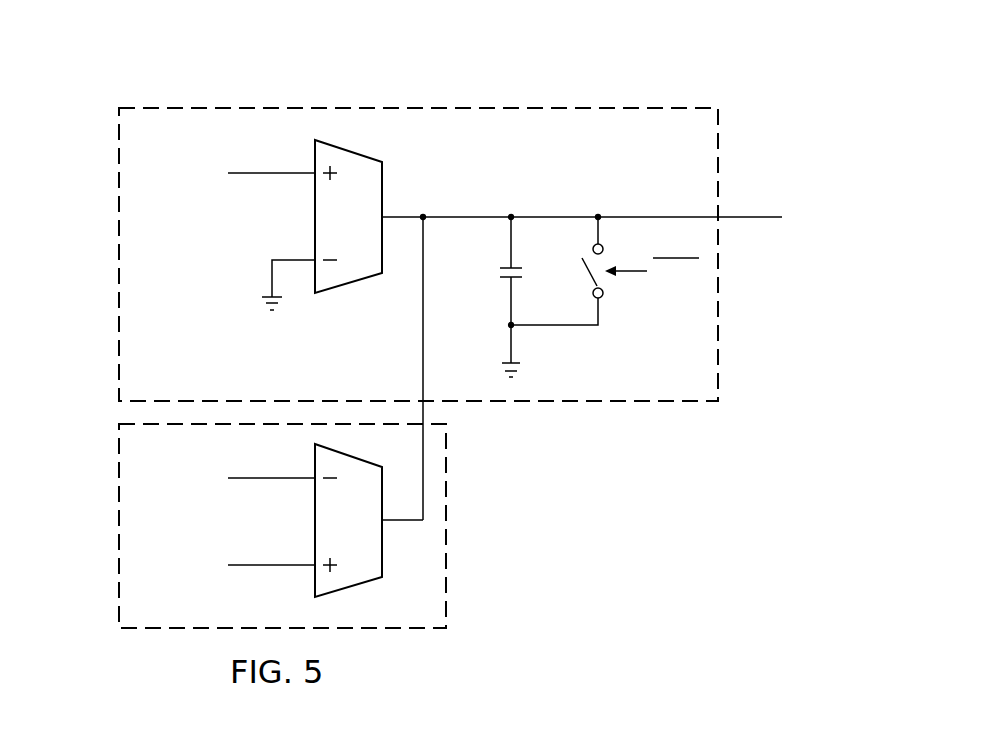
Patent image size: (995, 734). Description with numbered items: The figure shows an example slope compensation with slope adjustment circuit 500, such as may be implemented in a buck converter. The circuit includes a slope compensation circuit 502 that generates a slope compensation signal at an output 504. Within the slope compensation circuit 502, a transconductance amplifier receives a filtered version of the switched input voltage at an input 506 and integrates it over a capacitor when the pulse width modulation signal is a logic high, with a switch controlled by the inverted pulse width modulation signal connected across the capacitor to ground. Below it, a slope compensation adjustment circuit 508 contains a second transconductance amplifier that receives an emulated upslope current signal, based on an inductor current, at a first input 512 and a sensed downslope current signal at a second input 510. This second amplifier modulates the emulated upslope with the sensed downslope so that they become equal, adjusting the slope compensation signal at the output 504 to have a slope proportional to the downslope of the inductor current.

The slope compensation with slope adjustment circuit 500 is at (512, 86).
The slope compensation circuit 502 is at (118, 163).
The output 504 is at (750, 216).
The input 506 is at (272, 173).
The slope compensation adjustment circuit 508 is at (118, 542).
The second input 510 is at (272, 478).
The first input 512 is at (272, 565).